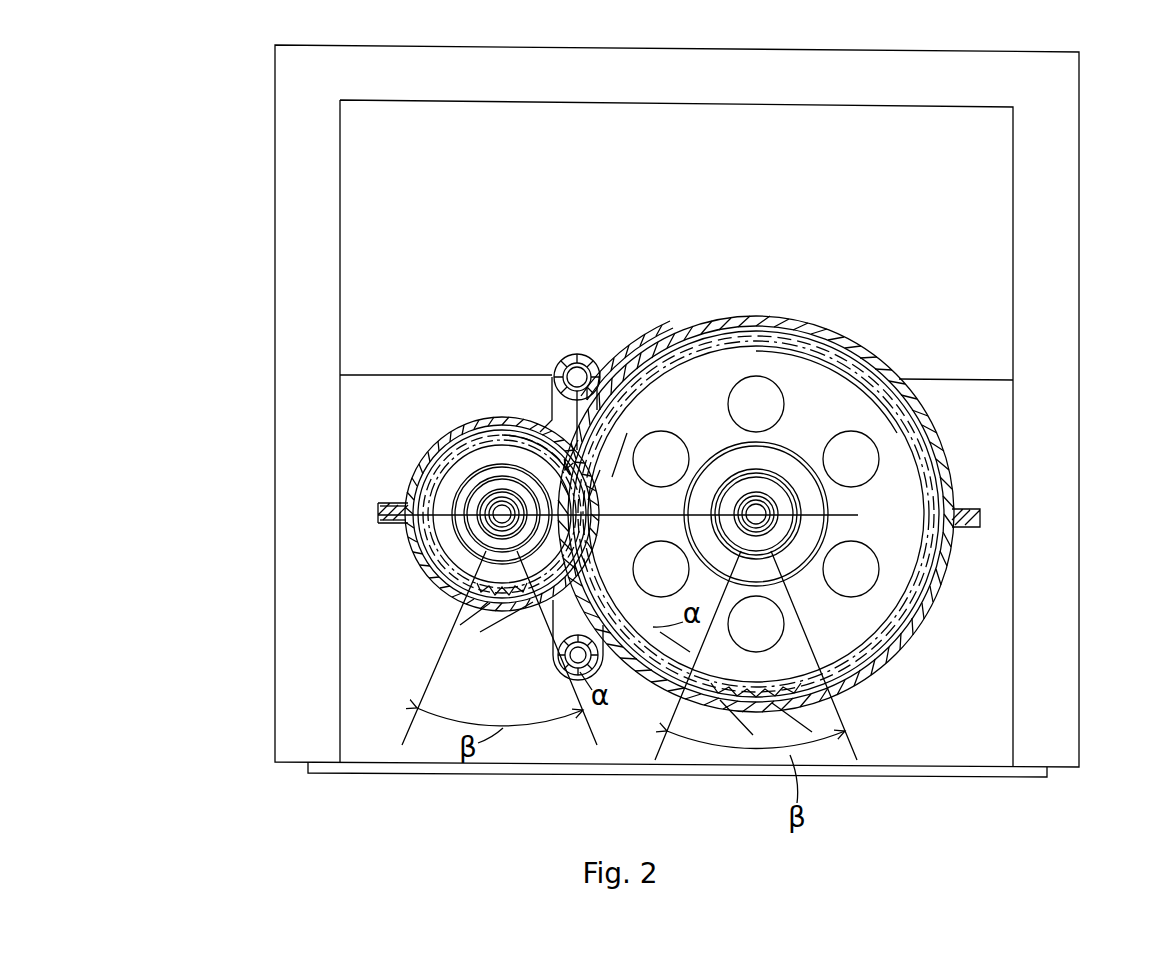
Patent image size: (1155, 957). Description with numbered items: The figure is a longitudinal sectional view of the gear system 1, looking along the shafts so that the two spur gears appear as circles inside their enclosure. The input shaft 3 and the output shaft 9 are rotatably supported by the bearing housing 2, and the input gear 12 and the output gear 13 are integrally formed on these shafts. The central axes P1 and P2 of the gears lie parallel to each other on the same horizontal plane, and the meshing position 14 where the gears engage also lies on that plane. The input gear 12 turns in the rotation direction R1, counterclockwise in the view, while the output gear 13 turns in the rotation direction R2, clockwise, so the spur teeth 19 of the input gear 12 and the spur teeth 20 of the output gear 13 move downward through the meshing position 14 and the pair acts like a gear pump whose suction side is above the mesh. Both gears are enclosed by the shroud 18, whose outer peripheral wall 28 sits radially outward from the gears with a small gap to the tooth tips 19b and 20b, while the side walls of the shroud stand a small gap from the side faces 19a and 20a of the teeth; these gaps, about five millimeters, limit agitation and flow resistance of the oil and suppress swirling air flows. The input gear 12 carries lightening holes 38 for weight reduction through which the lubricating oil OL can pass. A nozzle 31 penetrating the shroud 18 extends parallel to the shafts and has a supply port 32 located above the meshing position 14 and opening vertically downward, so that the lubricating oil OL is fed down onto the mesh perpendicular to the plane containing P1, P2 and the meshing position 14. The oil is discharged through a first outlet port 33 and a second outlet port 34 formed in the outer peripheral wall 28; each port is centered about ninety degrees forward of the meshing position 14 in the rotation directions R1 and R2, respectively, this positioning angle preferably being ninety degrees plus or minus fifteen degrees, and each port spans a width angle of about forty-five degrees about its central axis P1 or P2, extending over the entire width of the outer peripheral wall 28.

The gear system 1 is at (1086, 376).
The bearing housing 2 is at (1016, 430).
The input shaft 3 is at (763, 500).
The output shaft 9 is at (480, 503).
The input gear 12 is at (938, 492).
The output gear 13 is at (479, 514).
The meshing position 14 is at (626, 385).
The shroud 18 is at (745, 312).
The spur teeth 19 is at (838, 365).
The side faces of the teeth 19a is at (848, 372).
The tooth tips 19b is at (800, 345).
The spur teeth 20 is at (406, 534).
The side faces of the teeth 20a is at (418, 556).
The tooth tips 20b is at (380, 516).
The outer peripheral wall 28 is at (897, 665).
The nozzle 31 is at (580, 353).
The supply port 32 is at (548, 392).
The first outlet port 33 is at (712, 695).
The second outlet port 34 is at (548, 612).
The lightening holes 38 is at (765, 385).
The lubricating oil OL is at (552, 410).
The central axis of the input gear P1 is at (772, 629).
The central axis of the output gear P2 is at (485, 540).
The rotation direction of the input gear R1 is at (668, 398).
The rotation direction of the output gear R2 is at (522, 455).